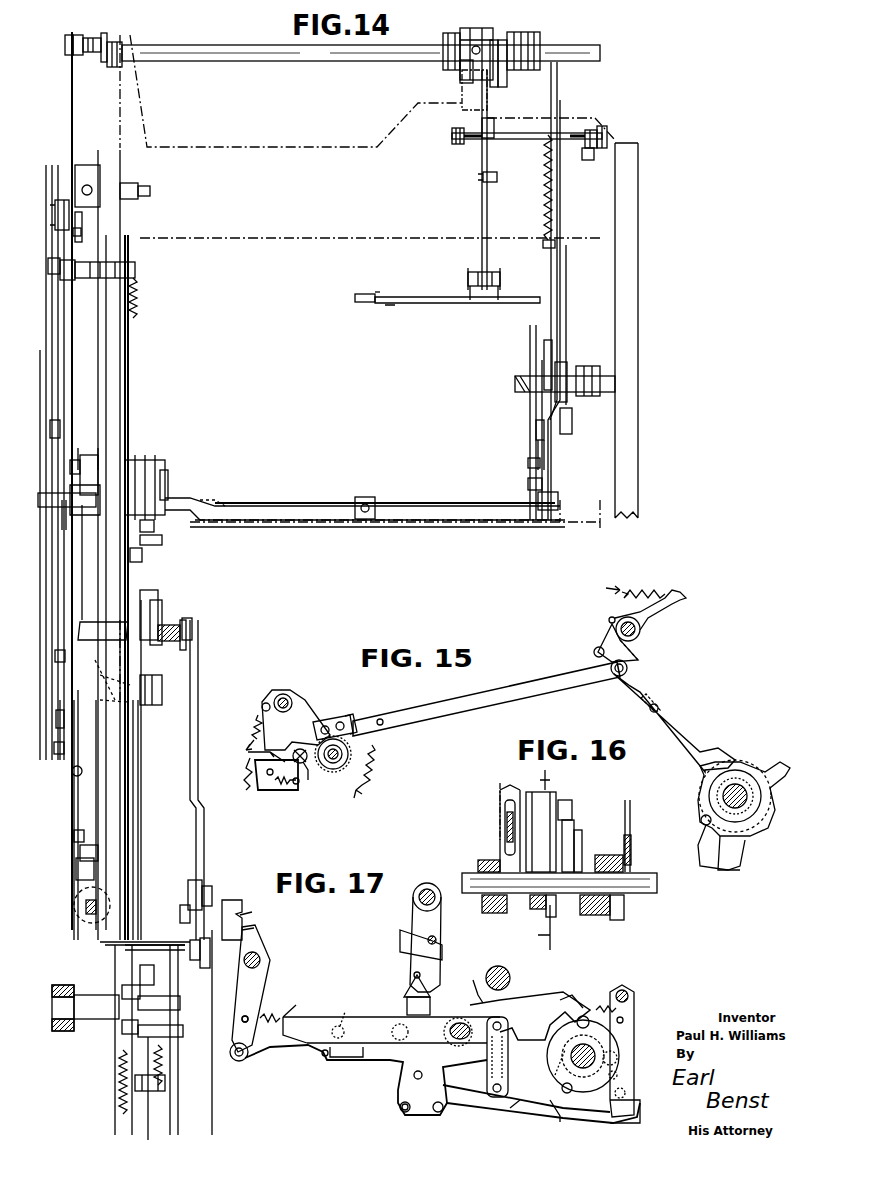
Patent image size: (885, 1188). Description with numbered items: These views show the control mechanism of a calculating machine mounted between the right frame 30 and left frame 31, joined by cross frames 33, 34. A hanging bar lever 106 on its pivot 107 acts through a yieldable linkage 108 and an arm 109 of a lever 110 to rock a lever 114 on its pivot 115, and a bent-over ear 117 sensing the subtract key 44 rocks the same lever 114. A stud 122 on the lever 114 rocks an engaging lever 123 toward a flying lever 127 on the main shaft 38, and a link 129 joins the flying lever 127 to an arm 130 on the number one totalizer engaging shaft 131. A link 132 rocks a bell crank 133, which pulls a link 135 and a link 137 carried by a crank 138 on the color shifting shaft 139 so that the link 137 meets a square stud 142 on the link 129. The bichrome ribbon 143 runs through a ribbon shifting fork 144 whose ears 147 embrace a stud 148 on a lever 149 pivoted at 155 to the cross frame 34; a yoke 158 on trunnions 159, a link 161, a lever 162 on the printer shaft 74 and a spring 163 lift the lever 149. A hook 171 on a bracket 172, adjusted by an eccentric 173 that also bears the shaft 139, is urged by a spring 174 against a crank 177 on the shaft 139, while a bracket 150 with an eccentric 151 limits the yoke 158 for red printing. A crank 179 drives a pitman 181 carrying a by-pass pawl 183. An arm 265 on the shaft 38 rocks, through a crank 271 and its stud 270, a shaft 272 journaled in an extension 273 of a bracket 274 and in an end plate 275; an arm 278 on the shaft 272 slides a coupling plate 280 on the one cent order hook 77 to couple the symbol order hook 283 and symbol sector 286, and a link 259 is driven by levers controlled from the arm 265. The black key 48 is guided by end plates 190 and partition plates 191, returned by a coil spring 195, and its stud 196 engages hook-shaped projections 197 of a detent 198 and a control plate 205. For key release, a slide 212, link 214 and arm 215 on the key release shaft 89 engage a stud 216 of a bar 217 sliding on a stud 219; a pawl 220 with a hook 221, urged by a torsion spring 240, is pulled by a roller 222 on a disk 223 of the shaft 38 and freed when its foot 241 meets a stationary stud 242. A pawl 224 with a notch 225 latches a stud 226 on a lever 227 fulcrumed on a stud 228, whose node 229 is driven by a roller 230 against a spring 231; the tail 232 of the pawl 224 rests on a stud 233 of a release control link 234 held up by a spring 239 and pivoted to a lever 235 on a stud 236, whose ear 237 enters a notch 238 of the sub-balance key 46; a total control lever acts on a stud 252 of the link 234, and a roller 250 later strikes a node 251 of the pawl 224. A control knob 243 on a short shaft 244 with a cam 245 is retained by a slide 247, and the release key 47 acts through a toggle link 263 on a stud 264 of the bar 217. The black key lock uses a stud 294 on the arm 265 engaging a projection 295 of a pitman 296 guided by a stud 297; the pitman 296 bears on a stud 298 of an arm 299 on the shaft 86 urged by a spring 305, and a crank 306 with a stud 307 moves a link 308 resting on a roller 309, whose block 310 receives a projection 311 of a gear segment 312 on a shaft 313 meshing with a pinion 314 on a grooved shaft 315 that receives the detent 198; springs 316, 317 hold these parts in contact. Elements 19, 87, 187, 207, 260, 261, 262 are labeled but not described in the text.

In FIG. 16, the section line 19 is at (544, 862).
In FIG. 14, the right frame 30 is at (638, 265).
In FIG. 14, the left frame 31 is at (98, 340).
In FIG. 14, the cross frame 33 is at (398, 527).
In FIG. 14, the cross frame 34 is at (258, 150).
In FIG. 16, the cross frame 34 is at (510, 782).
In FIG. 14, the main shaft 38 is at (38, 495).
In FIG. 15, the main shaft 38 is at (752, 796).
In FIG. 17, the main shaft 38 is at (571, 1056).
In FIG. 14, the subtract key 44 is at (100, 680).
In FIG. 14, the sub-balance key 46 is at (76, 868).
In FIG. 17, the sub-balance key 46 is at (242, 906).
In FIG. 14, the release key 47 is at (86, 907).
In FIG. 14, the black key 48 is at (140, 972).
In FIG. 14, the printer shaft 74 is at (600, 378).
In FIG. 14, the one cent order hook 77 is at (538, 450).
In FIG. 14, the shaft 86 is at (170, 641).
In FIG. 15, the shaft 86 is at (640, 634).
In FIG. 15, the pin 87 is at (608, 620).
In FIG. 14, the key release shaft 89 is at (162, 690).
In FIG. 17, the key release shaft 89 is at (413, 893).
In FIG. 14, the hanging bar lever 106 is at (438, 524).
In FIG. 14, the pivot 107 is at (355, 520).
In FIG. 14, the yieldable linkage 108 is at (154, 530).
In FIG. 14, the arm 109 is at (142, 562).
In FIG. 14, the lever 110 is at (115, 615).
In FIG. 14, the lever 114 is at (84, 745).
In FIG. 14, the pivot 115 is at (55, 656).
In FIG. 14, the bent-over ear 117 is at (105, 705).
In FIG. 14, the stud 122 is at (54, 748).
In FIG. 14, the engaging lever 123 is at (56, 718).
In FIG. 14, the flying lever 127 is at (50, 430).
In FIG. 14, the link 129 is at (58, 240).
In FIG. 14, the arm 130 is at (80, 165).
In FIG. 14, the No. 1 totalizer engaging shaft 131 is at (132, 183).
In FIG. 14, the link 132 is at (40, 372).
In FIG. 14, the bell crank 133 is at (48, 265).
In FIG. 14, the link 135 is at (55, 218).
In FIG. 14, the link 137 is at (71, 83).
In FIG. 14, the crank 138 is at (112, 42).
In FIG. 14, the color shifting shaft 139 is at (262, 60).
In FIG. 16, the color shifting shaft 139 is at (645, 873).
In FIG. 14, the square stud 142 is at (82, 226).
In FIG. 14, the bichrome inking ribbon 143 is at (370, 290).
In FIG. 14, the ribbon shifting fork 144 is at (450, 303).
In FIG. 14, the right angled ears 147 is at (468, 284).
In FIG. 14, the stud 148 is at (476, 262).
In FIG. 14, the lever 149 is at (482, 200).
In FIG. 14, the bracket 150 is at (462, 72).
In FIG. 16, the bracket 150 is at (500, 808).
In FIG. 16, the eccentric 151 is at (550, 915).
In FIG. 14, the pivot 155 is at (478, 177).
In FIG. 14, the yoke 158 is at (505, 140).
In FIG. 14, the trunnions 159 is at (452, 140).
In FIG. 14, the link 161 is at (560, 215).
In FIG. 14, the lever 162 is at (572, 420).
In FIG. 14, the spring 163 is at (545, 205).
In FIG. 14, the hook 171 is at (497, 85).
In FIG. 16, the hook 171 is at (574, 828).
In FIG. 14, the bracket 172 is at (480, 28).
In FIG. 16, the bracket 172 is at (540, 792).
In FIG. 16, the eccentric 173 is at (492, 860).
In FIG. 16, the spring 174 is at (566, 800).
In FIG. 14, the crank 177 is at (505, 80).
In FIG. 16, the crank 177 is at (582, 842).
In FIG. 14, the crank 179 is at (538, 36).
In FIG. 16, the crank 179 is at (628, 800).
In FIG. 14, the pitman 181 is at (557, 90).
In FIG. 14, the by-pass pawl 183 is at (567, 370).
In FIG. 14, the plate 187 is at (552, 350).
In FIG. 14, the end plates 190 is at (119, 1085).
In FIG. 14, the partition plates 191 is at (190, 1098).
In FIG. 14, the coil spring 195 is at (165, 1035).
In FIG. 15, the stud 196 is at (252, 788).
In FIG. 15, the hook-shaped projections 197 is at (248, 752).
In FIG. 14, the detent 198 is at (148, 1135).
In FIG. 15, the detent 198 is at (268, 790).
In FIG. 14, the control plate 205 is at (152, 1091).
In FIG. 14, the spring 207 is at (162, 1065).
In FIG. 15, the spring 207 is at (284, 790).
In FIG. 14, the slide 212 is at (100, 943).
In FIG. 14, the link 214 is at (141, 818).
In FIG. 17, the link 214 is at (400, 945).
In FIG. 14, the arm 215 is at (138, 728).
In FIG. 17, the arm 215 is at (413, 912).
In FIG. 17, the stud 216 is at (414, 976).
In FIG. 14, the bar 217 is at (96, 800).
In FIG. 17, the bar 217 is at (283, 1008).
In FIG. 17, the stud 219 is at (462, 1018).
In FIG. 14, the pawl 220 is at (82, 555).
In FIG. 17, the pawl 220 is at (540, 996).
In FIG. 17, the hook 221 is at (585, 990).
In FIG. 14, the roller 222 is at (62, 530).
In FIG. 17, the roller 222 is at (577, 1024).
In FIG. 14, the disk 223 is at (108, 428).
In FIG. 17, the disk 223 is at (555, 1072).
In FIG. 14, the pawl 224 is at (70, 467).
In FIG. 17, the pawl 224 is at (517, 1113).
In FIG. 17, the notch 225 is at (608, 1130).
In FIG. 17, the stud 226 is at (626, 1092).
In FIG. 14, the lever 227 is at (95, 450).
In FIG. 17, the lever 227 is at (602, 1002).
In FIG. 17, the stud 228 is at (634, 992).
In FIG. 17, the node 229 is at (617, 1055).
In FIG. 17, the roller 230 is at (617, 1072).
In FIG. 17, the spring 231 is at (623, 1018).
In FIG. 17, the tail 232 is at (470, 1095).
In FIG. 17, the stud 233 is at (430, 1118).
In FIG. 14, the release control link 234 is at (74, 817).
In FIG. 17, the release control link 234 is at (393, 1064).
In FIG. 14, the lever 235 is at (74, 836).
In FIG. 17, the lever 235 is at (258, 990).
In FIG. 17, the stud 236 is at (260, 960).
In FIG. 17, the bent-over ear 237 is at (254, 928).
In FIG. 17, the notch 238 is at (252, 912).
In FIG. 14, the spring 239 is at (74, 776).
In FIG. 17, the spring 239 is at (348, 1012).
In FIG. 17, the torsion spring 240 is at (487, 1070).
In FIG. 17, the extending foot 241 is at (463, 983).
In FIG. 17, the stationary stud 242 is at (510, 975).
In FIG. 14, the control knob 243 is at (68, 978).
In FIG. 14, the short shaft 244 is at (165, 1010).
In FIG. 14, the cam 245 is at (122, 1027).
In FIG. 14, the slide 247 is at (125, 988).
In FIG. 17, the roller 250 is at (554, 1083).
In FIG. 17, the node 251 is at (548, 1118).
In FIG. 17, the stud 252 is at (400, 1107).
In FIG. 14, the link 259 is at (128, 373).
In FIG. 14, the pin 260 is at (81, 232).
In FIG. 14, the spring 261 is at (137, 300).
In FIG. 14, the shaft 262 is at (85, 258).
In FIG. 14, the toggle link 263 is at (92, 887).
In FIG. 14, the stud 264 is at (98, 850).
In FIG. 14, the arm 265 is at (162, 542).
In FIG. 15, the arm 265 is at (740, 832).
In FIG. 14, the stud 270 is at (150, 460).
In FIG. 14, the crank 271 is at (190, 496).
In FIG. 14, the shaft 272 is at (300, 494).
In FIG. 14, the extension 273 is at (165, 478).
In FIG. 14, the bracket 274 is at (222, 493).
In FIG. 14, the end plates 275 is at (558, 500).
In FIG. 14, the arm 278 is at (528, 486).
In FIG. 14, the coupling plate 280 is at (528, 464).
In FIG. 14, the symbol order hook 283 is at (536, 430).
In FIG. 14, the symbol sector 286 is at (530, 330).
In FIG. 15, the stud 294 is at (702, 824).
In FIG. 15, the projection 295 is at (699, 805).
In FIG. 14, the pitman 296 is at (158, 595).
In FIG. 15, the pitman 296 is at (672, 722).
In FIG. 14, the stud 297 is at (158, 610).
In FIG. 15, the stud 297 is at (660, 708).
In FIG. 15, the stud 298 is at (595, 652).
In FIG. 14, the arm 299 is at (188, 618).
In FIG. 15, the arm 299 is at (672, 608).
In FIG. 15, the spring 305 is at (650, 590).
In FIG. 14, the crank 306 is at (186, 632).
In FIG. 15, the crank 306 is at (638, 652).
In FIG. 15, the stud 307 is at (628, 672).
In FIG. 14, the link 308 is at (210, 728).
In FIG. 15, the link 308 is at (500, 686).
In FIG. 14, the roller 309 is at (180, 912).
In FIG. 15, the roller 309 is at (345, 768).
In FIG. 14, the block 310 is at (202, 874).
In FIG. 15, the block 310 is at (355, 712).
In FIG. 15, the rounded projection 311 is at (340, 720).
In FIG. 14, the gear segment 312 is at (212, 980).
In FIG. 15, the gear segment 312 is at (300, 715).
In FIG. 15, the shaft 313 is at (288, 694).
In FIG. 14, the pinion 314 is at (190, 950).
In FIG. 15, the pinion 314 is at (305, 762).
In FIG. 14, the shaft 315 is at (210, 950).
In FIG. 15, the shaft 315 is at (308, 780).
In FIG. 15, the spring 316 is at (375, 752).
In FIG. 15, the spring 317 is at (250, 717).